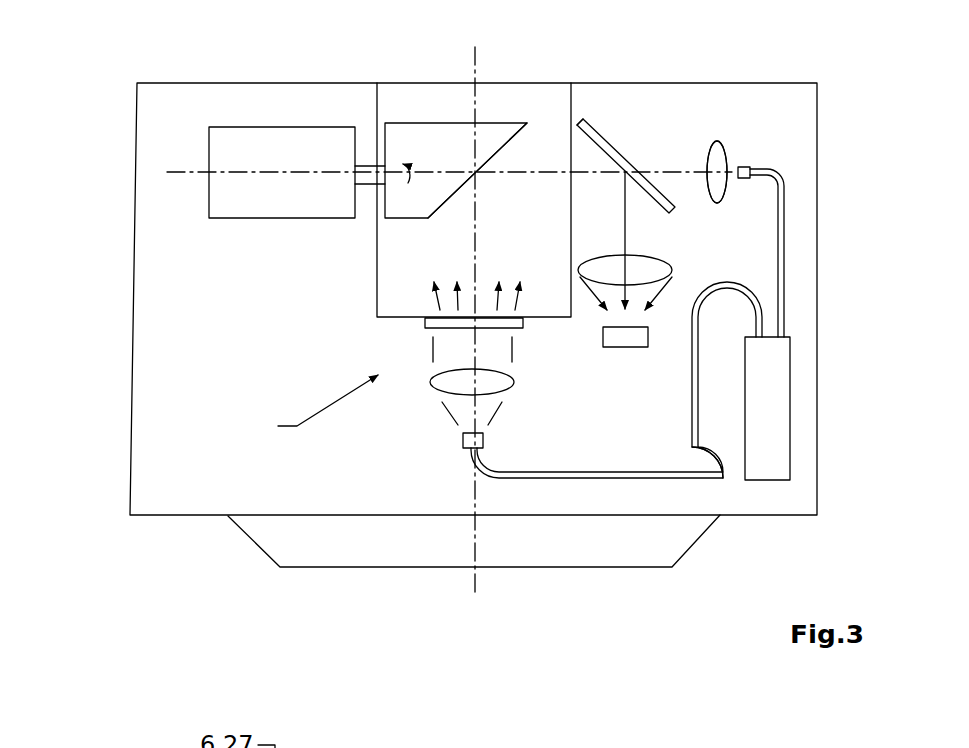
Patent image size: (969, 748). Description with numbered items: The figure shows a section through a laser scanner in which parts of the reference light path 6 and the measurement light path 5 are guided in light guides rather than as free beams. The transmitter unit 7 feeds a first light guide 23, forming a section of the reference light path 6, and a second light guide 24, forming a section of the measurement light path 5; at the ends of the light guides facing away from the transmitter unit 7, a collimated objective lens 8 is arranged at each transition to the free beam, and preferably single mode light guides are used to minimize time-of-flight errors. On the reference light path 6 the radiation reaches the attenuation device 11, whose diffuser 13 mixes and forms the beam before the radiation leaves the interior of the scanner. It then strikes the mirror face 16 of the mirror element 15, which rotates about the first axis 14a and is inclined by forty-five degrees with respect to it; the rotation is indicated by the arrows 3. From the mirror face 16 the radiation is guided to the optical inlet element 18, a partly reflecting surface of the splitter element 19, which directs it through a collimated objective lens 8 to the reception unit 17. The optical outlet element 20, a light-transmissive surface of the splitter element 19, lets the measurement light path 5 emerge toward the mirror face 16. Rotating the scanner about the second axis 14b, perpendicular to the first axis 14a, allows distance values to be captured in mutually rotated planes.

The arrows 3 is at (403, 172).
The measurement light path 5 is at (665, 170).
The reference light path 6 is at (560, 473).
The transmitter unit 7 is at (778, 398).
The collimated objective lens 8 is at (727, 160).
The attenuation device 11 is at (314, 408).
The diffuser 13 is at (430, 325).
The first axis 14a is at (180, 173).
The second axis 14b is at (475, 47).
The mirror element 15 is at (455, 137).
The mirror face 16 is at (450, 198).
The reception unit 17 is at (630, 340).
The optical inlet element 18 is at (603, 142).
The splitter element 19 is at (578, 121).
The optical outlet element 20 is at (600, 137).
The first light guide 23 is at (672, 477).
The second light guide 24 is at (782, 242).